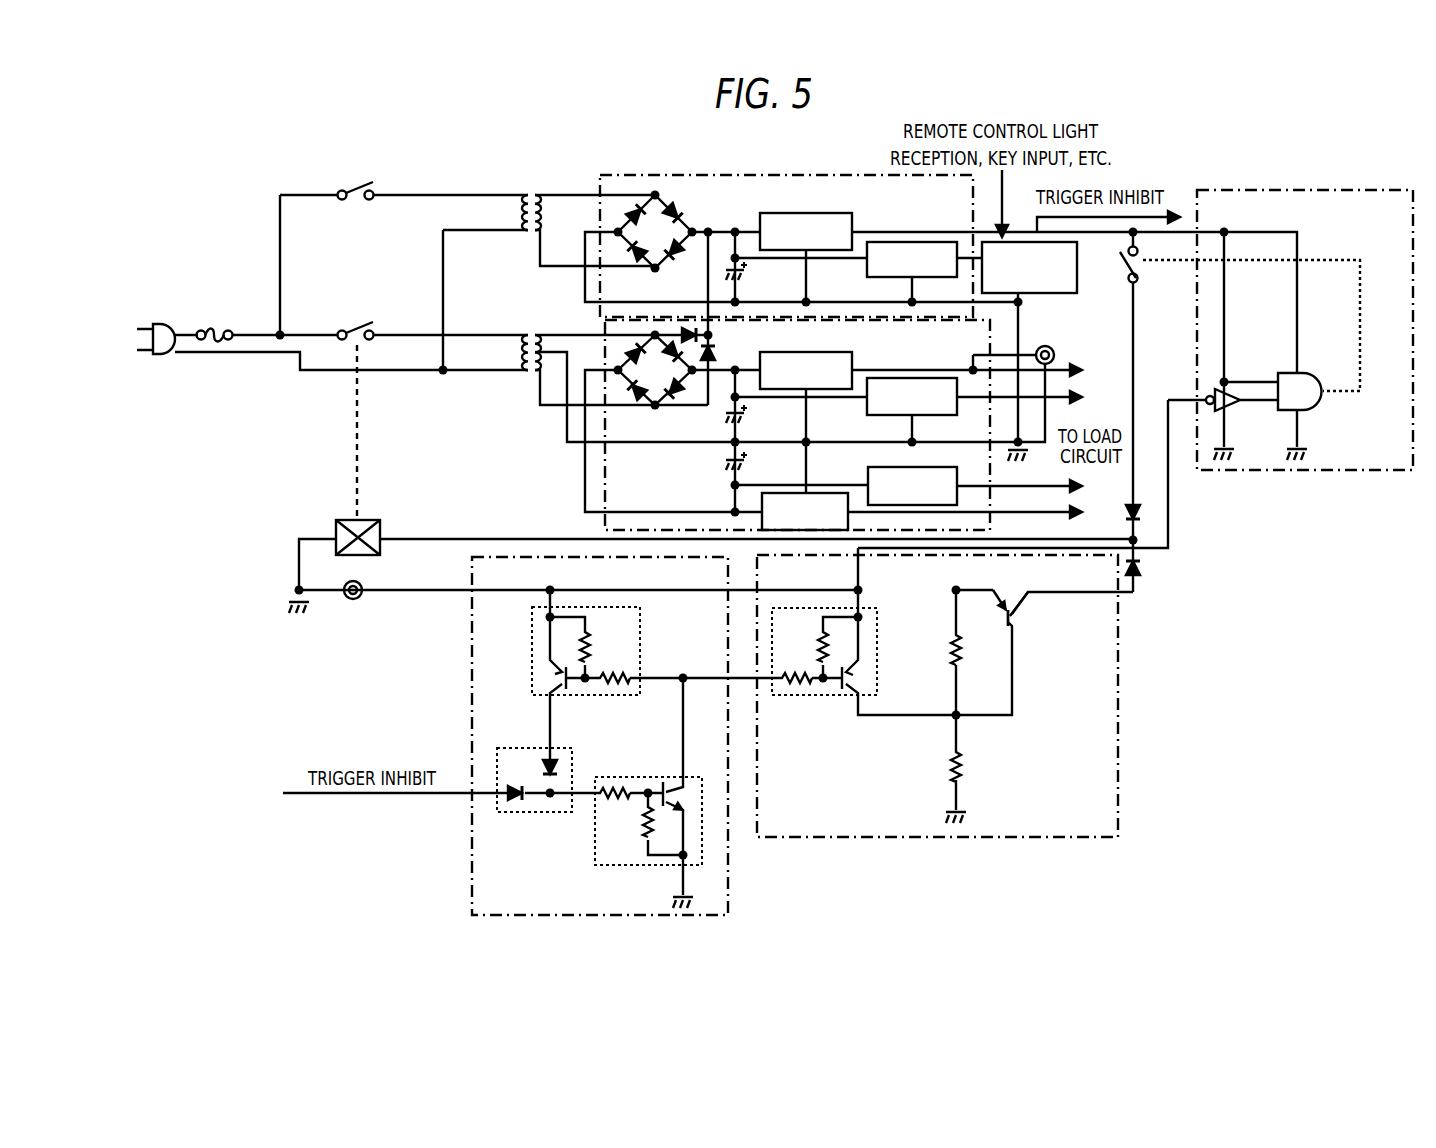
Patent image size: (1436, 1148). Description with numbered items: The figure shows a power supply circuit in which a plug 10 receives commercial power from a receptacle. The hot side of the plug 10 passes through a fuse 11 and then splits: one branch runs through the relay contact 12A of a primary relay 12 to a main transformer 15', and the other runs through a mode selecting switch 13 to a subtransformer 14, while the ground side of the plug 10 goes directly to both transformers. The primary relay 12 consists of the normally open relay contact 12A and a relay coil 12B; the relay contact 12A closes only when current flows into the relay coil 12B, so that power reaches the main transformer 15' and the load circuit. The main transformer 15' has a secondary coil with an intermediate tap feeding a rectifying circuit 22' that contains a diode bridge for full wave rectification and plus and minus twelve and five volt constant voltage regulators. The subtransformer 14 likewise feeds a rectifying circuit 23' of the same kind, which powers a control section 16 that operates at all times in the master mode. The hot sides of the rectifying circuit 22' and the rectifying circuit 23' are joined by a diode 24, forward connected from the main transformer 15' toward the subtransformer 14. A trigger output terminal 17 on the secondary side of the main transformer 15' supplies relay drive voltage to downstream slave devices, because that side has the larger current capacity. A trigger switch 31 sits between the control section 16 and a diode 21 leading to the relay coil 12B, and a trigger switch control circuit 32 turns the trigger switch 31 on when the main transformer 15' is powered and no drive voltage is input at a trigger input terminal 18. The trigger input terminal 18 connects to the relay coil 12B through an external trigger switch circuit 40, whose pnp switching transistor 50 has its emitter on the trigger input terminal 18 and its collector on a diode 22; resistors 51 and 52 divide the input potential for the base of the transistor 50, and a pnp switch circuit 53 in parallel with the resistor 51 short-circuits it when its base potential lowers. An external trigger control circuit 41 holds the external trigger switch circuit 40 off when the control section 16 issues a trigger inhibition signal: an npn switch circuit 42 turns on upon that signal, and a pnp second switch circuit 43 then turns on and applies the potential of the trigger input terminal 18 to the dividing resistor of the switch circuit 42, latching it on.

The plug 10 is at (146, 326).
The fuse 11 is at (202, 319).
The primary relay 12 is at (285, 432).
The relay contact 12A is at (338, 319).
The relay coil 12B is at (331, 522).
The mode selecting switch 13 is at (347, 173).
The subtransformer 14 is at (522, 189).
The main transformer 15' is at (522, 327).
The control section 16 is at (1043, 276).
The trigger output terminal 17 is at (1053, 334).
The trigger input terminal 18 is at (372, 605).
The diode 21 is at (1176, 520).
The diode 22 is at (1176, 566).
The rectifying circuit 22' is at (753, 425).
The rectifying circuit 23' is at (786, 230).
The diode 24 is at (719, 344).
The trigger switch 31 is at (1240, 368).
The trigger switch control circuit 32 is at (1290, 359).
The external trigger switch circuit 40 is at (966, 696).
The external trigger control circuit 41 is at (535, 737).
The switch circuit 42 is at (648, 847).
The second switch circuit 43 is at (589, 679).
The switching transistor 50 is at (1026, 640).
The resistor 51 is at (978, 663).
The resistor 52 is at (983, 786).
The switch circuit 53 is at (824, 679).